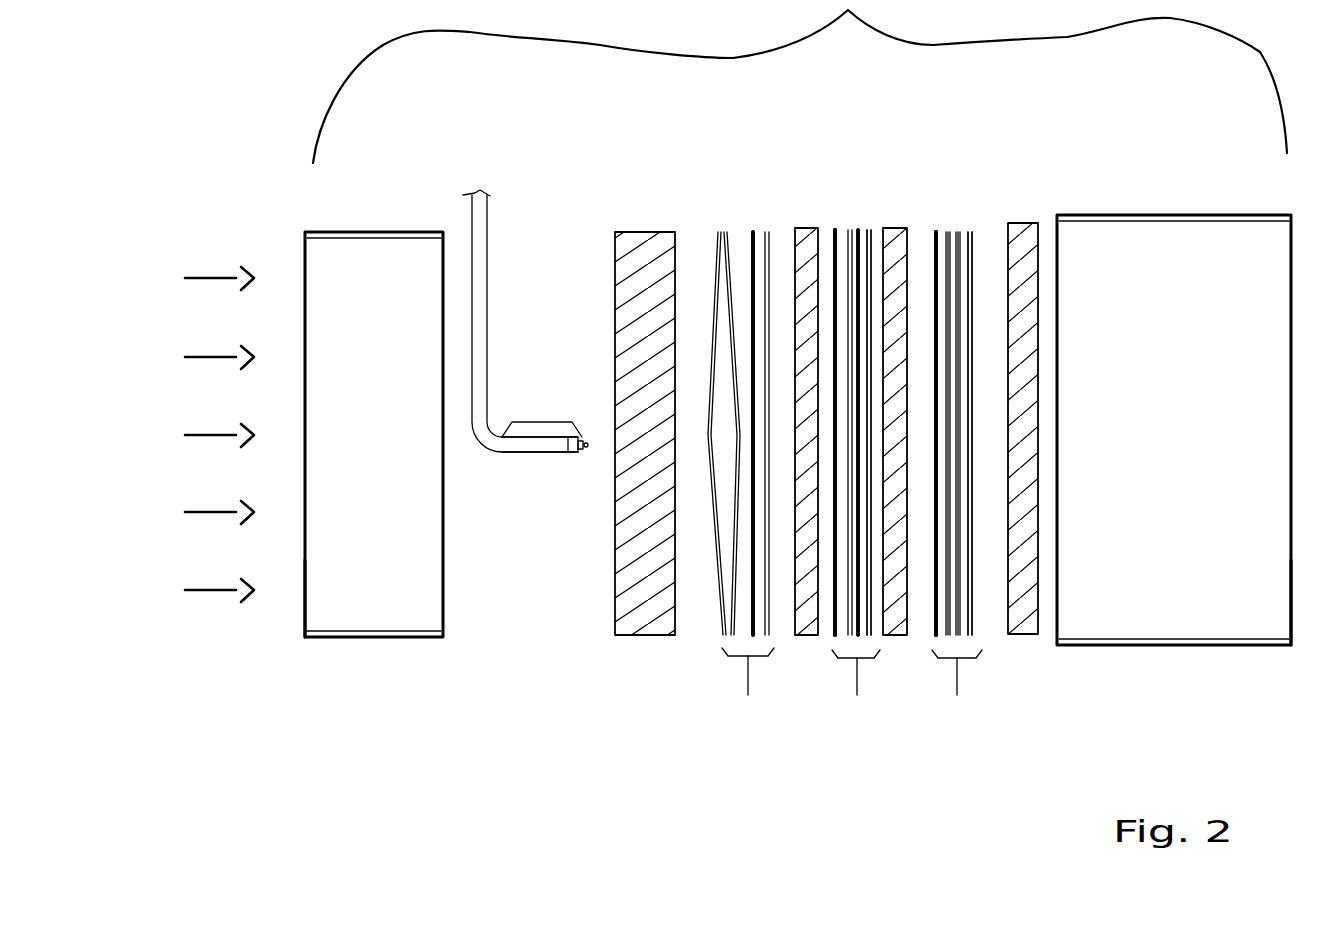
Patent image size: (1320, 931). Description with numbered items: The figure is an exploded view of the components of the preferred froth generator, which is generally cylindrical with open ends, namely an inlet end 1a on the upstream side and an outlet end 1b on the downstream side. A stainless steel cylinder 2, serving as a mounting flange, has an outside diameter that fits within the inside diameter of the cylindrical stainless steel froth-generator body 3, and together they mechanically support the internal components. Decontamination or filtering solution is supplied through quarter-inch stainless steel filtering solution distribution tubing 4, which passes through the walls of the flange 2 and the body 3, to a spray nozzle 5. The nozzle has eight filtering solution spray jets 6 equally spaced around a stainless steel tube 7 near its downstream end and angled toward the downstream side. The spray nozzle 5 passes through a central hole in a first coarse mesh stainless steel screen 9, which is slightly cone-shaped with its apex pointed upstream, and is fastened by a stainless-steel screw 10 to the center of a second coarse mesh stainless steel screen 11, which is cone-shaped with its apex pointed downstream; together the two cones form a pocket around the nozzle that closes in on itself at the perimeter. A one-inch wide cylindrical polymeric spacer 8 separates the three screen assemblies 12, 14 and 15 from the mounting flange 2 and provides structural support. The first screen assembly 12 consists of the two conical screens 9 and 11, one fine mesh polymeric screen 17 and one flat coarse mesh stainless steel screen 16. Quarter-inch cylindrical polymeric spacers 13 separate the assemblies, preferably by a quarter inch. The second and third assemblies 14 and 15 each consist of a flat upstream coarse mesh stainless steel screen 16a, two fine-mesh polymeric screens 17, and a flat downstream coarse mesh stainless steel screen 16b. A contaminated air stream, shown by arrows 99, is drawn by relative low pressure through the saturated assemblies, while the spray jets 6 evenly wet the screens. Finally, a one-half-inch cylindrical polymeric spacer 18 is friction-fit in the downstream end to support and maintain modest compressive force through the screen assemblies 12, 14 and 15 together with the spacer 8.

The inlet end 1a is at (302, 612).
The outlet end 1b is at (1292, 612).
The stainless steel cylinder 2 is at (355, 265).
The froth-generator body 3 is at (1163, 265).
The filtering solution distribution tubing 4 is at (483, 235).
The spray nozzle 5 is at (543, 422).
The filtering solution spray jets 6 is at (566, 455).
The stainless steel tube 7 is at (530, 447).
The cylindrical polymeric spacer 8 is at (645, 257).
The first coarse mesh stainless steel screen 9 is at (717, 262).
The stainless-steel screw 10 is at (586, 452).
The second coarse mesh stainless steel screen 11 is at (733, 262).
The first screen assembly 12 is at (698, 437).
The cylindrical polymeric spacers 13 is at (808, 635).
The second screen assembly 14 is at (856, 484).
The third screen assembly 15 is at (957, 484).
The flat coarse mesh stainless steel screen 16 is at (773, 626).
The upstream coarse mesh stainless steel screen 16a is at (837, 232).
The downstream coarse mesh stainless steel screen 16b is at (968, 233).
The fine mesh polymeric screen 17 is at (858, 230).
The cylindrical polymeric spacer 18 is at (1021, 240).
The contaminated air stream 99 is at (203, 435).